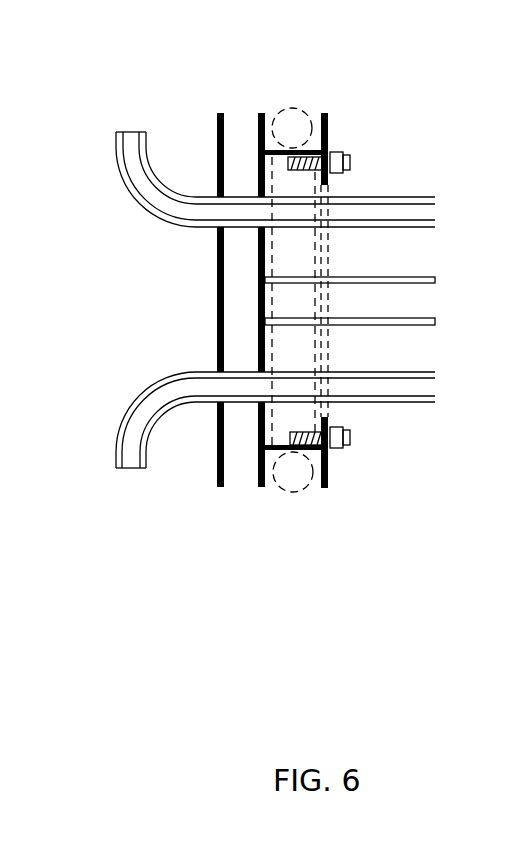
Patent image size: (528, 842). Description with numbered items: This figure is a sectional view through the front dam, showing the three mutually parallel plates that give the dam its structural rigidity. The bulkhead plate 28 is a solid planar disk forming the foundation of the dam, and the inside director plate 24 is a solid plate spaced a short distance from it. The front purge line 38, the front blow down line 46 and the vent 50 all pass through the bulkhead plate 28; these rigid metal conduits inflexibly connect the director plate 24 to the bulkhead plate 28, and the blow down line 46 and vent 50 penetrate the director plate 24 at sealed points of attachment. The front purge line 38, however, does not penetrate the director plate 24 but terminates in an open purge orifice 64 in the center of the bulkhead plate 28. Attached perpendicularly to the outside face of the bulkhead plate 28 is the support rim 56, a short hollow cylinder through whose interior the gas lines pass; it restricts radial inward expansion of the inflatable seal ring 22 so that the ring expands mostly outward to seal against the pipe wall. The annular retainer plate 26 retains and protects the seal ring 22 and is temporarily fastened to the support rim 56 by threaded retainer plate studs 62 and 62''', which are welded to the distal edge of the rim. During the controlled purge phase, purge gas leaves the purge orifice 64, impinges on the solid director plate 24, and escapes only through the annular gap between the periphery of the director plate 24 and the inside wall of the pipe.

The seal ring 22 is at (282, 110).
The director plate 24 is at (181, 319).
The retainer plate 26 is at (416, 329).
The bulkhead plate 28 is at (216, 353).
The front purge line 38 is at (387, 277).
The front blow down line 46 is at (124, 420).
The vent 50 is at (121, 178).
The support rim 56 is at (325, 143).
The retainer plate stud 62 is at (392, 112).
The retainer plate stud 62''' is at (392, 440).
The purge orifice 64 is at (268, 298).